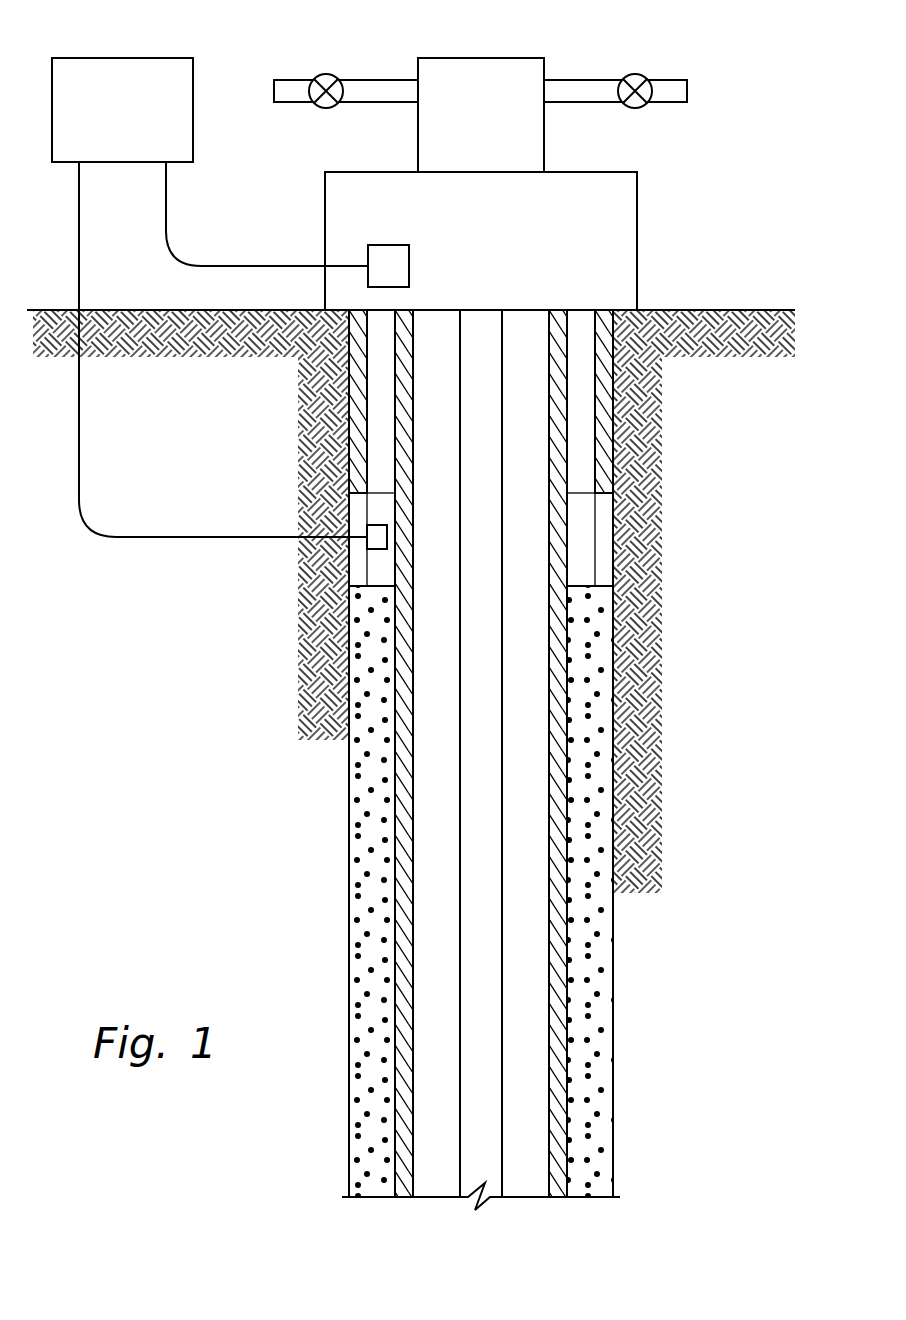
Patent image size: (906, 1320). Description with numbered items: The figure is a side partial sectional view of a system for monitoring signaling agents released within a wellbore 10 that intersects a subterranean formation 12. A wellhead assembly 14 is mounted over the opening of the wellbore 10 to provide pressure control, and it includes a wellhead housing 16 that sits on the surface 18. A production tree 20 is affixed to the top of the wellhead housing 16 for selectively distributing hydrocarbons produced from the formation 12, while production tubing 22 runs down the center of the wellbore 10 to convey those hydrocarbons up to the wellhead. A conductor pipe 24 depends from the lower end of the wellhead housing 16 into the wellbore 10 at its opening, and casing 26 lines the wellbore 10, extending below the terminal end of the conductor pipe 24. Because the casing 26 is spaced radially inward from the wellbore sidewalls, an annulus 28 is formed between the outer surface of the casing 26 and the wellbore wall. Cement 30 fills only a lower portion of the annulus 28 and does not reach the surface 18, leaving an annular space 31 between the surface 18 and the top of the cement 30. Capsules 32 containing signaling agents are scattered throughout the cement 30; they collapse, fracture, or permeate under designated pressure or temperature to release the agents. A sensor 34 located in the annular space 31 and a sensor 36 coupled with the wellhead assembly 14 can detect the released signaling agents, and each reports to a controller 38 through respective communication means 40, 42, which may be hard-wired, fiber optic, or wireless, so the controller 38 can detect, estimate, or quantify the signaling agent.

The wellbore 10 is at (583, 948).
The subterranean formation 12 is at (648, 727).
The wellhead assembly 14 is at (518, 158).
The wellhead housing 16 is at (637, 228).
The surface 18 is at (739, 308).
The production tree 20 is at (478, 57).
The production tubing 22 is at (496, 996).
The conductor pipe 24 is at (603, 470).
The casing 26 is at (556, 540).
The annulus 28 is at (592, 1016).
The cement 30 is at (613, 1050).
The annular space 31 is at (597, 568).
The capsules 32 is at (589, 1091).
The sensor 34 is at (377, 542).
The sensor 36 is at (409, 268).
The controller 38 is at (122, 110).
The communication means 40 is at (79, 193).
The communication means 42 is at (166, 195).